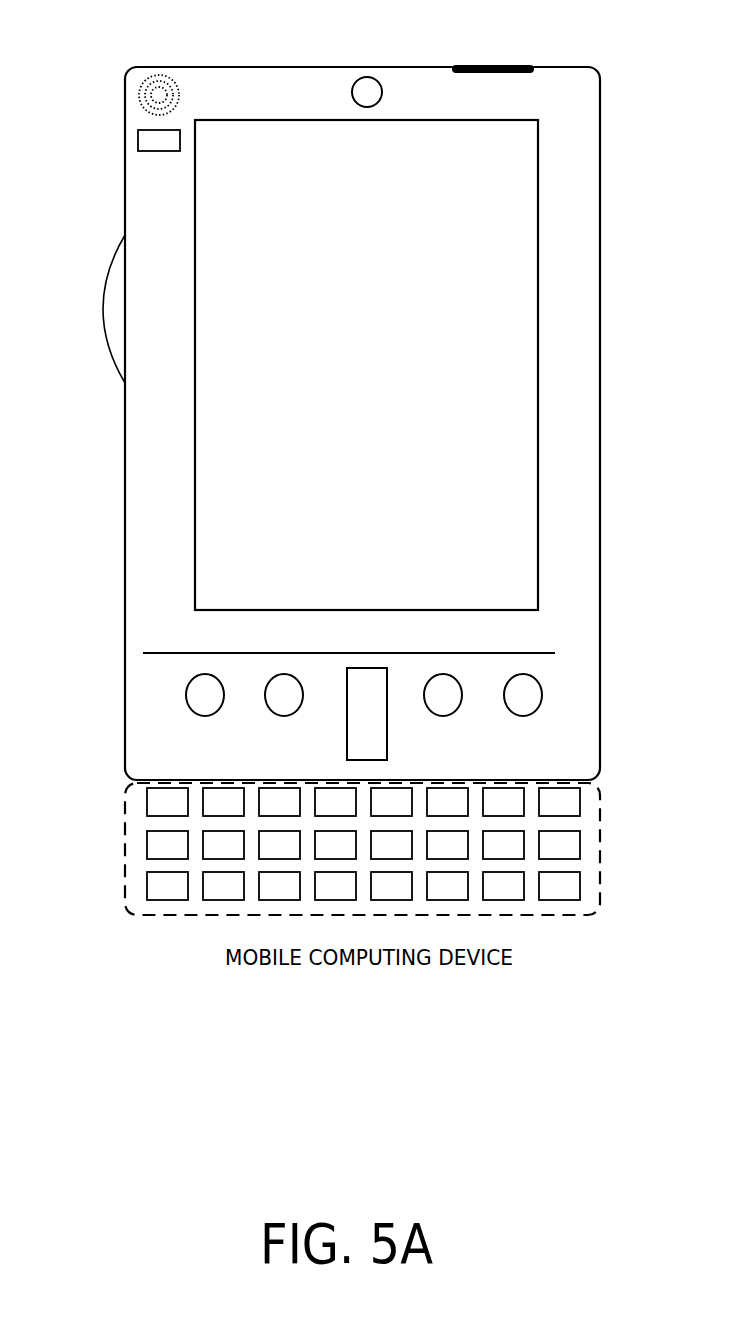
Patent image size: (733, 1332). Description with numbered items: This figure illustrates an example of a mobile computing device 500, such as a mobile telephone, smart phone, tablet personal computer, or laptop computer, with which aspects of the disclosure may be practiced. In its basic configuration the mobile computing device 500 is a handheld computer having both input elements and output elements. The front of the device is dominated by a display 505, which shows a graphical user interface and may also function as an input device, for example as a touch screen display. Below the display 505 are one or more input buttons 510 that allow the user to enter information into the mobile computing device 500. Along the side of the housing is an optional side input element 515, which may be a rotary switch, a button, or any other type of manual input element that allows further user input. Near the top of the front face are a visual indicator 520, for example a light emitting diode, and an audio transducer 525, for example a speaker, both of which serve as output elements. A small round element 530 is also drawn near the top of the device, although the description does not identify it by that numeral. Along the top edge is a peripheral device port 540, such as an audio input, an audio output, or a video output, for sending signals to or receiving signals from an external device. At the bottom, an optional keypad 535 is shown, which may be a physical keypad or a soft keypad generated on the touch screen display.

The mobile computing device 500 is at (600, 94).
The display 505 is at (222, 455).
The input buttons 510 is at (347, 722).
The side input element 515 is at (103, 293).
The visual indicator 520 is at (138, 136).
The audio transducer 525 is at (138, 88).
The camera 530 is at (360, 77).
The keypad 535 is at (137, 848).
The peripheral device port 540 is at (502, 64).